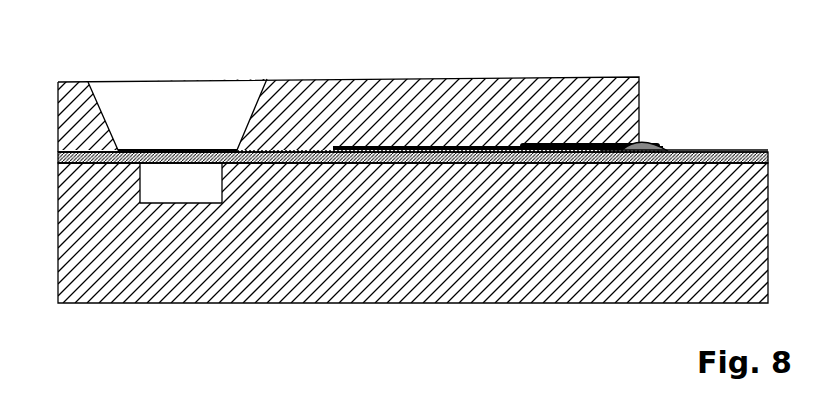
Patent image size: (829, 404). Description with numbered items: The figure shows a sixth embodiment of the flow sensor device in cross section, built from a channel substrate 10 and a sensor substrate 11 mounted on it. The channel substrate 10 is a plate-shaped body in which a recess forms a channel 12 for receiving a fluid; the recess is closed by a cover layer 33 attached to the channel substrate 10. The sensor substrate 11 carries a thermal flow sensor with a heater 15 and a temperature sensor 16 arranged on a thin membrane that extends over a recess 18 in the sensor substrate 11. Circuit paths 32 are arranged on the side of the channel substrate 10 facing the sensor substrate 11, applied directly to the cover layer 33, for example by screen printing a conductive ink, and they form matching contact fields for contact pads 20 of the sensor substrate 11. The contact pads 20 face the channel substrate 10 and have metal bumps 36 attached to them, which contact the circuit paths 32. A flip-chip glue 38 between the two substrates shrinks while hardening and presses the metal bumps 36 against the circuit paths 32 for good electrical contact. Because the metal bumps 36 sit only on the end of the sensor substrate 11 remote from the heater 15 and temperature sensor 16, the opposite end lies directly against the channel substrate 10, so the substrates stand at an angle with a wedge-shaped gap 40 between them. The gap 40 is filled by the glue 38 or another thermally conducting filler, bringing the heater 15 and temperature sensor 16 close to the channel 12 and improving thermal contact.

The channel substrate 10 is at (391, 292).
The sensor substrate 11 is at (57, 131).
The channel 12 is at (192, 191).
The heater 15 is at (175, 148).
The temperature sensor 16 is at (208, 148).
The recess 18 is at (202, 115).
The contact pads 20 is at (562, 145).
The circuit paths 32 is at (738, 152).
The cover layer 33 is at (308, 163).
The metal bumps 36 is at (658, 143).
The flip-chip glue 38 is at (647, 139).
The wedge-shaped gap 40 is at (270, 152).